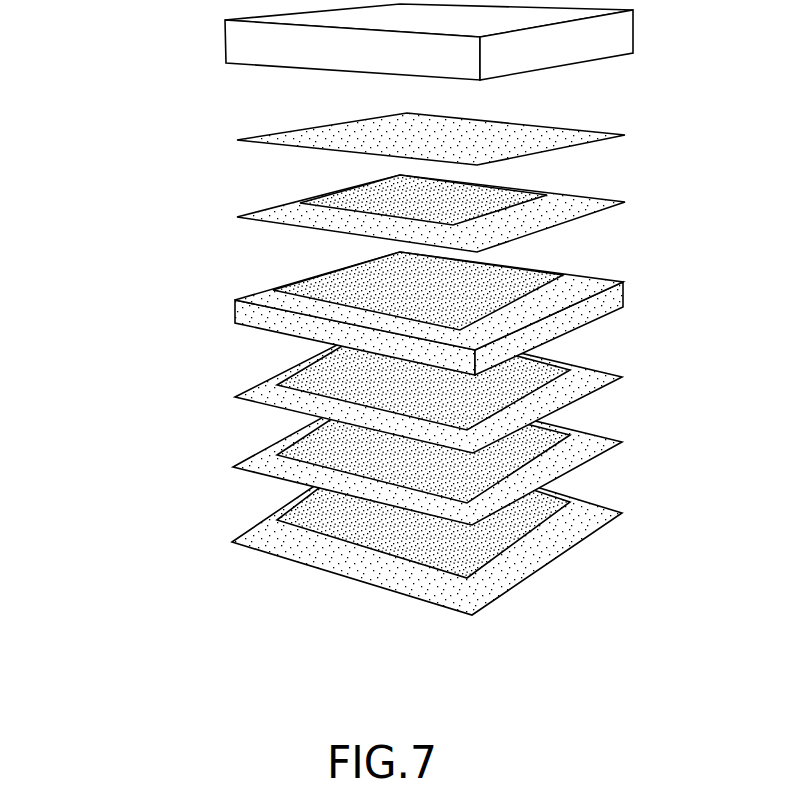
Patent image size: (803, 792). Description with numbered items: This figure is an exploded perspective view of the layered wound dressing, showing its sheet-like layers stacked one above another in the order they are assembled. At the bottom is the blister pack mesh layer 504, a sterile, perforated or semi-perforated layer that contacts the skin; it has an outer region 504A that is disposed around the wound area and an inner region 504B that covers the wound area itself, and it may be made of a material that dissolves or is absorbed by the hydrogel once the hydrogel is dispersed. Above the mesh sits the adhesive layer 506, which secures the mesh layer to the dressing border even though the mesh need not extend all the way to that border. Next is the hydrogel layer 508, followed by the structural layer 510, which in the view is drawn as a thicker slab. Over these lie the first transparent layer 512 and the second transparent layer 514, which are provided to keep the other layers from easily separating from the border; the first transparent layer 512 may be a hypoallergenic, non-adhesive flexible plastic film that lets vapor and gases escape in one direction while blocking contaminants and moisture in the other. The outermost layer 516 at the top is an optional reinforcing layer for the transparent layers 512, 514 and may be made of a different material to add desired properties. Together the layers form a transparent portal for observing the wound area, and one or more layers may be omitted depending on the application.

The blister pack mesh layer 504 is at (359, 538).
The region 504A is at (405, 580).
The region 504B is at (493, 542).
The adhesive layer 506 is at (189, 464).
The hydrogel layer 508 is at (190, 395).
The structural layer 510 is at (192, 315).
The first transparent layer 512 is at (193, 214).
The second transparent layer 514 is at (193, 138).
The outermost layer 516 is at (195, 40).